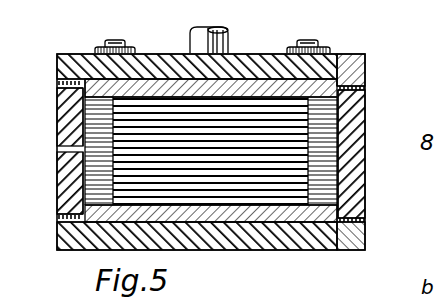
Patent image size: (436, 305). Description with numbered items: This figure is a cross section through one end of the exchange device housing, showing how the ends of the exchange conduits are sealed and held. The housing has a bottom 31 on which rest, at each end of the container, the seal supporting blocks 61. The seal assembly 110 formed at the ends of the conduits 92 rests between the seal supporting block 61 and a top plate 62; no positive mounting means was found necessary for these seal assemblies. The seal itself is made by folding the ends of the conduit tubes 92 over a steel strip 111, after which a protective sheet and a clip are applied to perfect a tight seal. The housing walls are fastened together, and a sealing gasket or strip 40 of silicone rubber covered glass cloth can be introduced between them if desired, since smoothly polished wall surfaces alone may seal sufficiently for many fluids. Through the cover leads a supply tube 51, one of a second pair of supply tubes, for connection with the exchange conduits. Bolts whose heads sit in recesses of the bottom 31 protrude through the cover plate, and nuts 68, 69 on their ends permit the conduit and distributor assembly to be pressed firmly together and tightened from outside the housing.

The sealing gasket 40 is at (55, 85).
The supply tube 51 is at (226, 46).
The seal supporting block 61 is at (336, 210).
The top plate 62 is at (342, 74).
The nut 68 is at (143, 30).
The nut 69 is at (336, 28).
The conduit 92 is at (290, 160).
The seal assembly 110 is at (345, 158).
The steel strip 111 is at (300, 142).
The bottom 31 is at (366, 232).